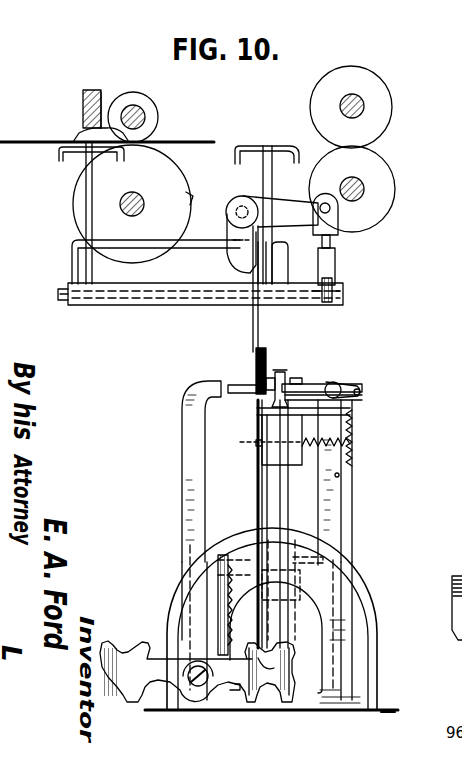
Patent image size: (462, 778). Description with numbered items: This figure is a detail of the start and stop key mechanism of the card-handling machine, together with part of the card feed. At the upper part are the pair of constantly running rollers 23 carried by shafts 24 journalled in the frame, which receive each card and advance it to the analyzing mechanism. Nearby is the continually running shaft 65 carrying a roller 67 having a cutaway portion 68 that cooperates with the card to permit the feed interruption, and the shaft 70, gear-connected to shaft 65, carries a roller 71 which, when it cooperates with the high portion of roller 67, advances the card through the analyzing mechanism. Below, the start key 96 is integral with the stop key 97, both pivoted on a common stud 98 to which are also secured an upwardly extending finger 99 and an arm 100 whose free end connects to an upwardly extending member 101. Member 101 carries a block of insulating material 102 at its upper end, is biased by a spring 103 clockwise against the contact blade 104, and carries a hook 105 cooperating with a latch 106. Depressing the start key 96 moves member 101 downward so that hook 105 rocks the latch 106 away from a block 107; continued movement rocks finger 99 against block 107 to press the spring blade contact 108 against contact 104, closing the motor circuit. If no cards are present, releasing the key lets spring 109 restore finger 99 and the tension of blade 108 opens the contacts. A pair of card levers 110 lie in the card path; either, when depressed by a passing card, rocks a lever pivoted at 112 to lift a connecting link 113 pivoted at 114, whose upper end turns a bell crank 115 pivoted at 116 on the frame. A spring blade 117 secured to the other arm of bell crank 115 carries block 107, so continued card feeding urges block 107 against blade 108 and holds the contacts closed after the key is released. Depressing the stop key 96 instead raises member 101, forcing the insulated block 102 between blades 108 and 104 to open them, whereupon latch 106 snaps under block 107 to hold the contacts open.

The constantly running rollers 23 is at (376, 184).
The shafts 24 is at (358, 115).
The continually running shaft 65 is at (141, 198).
The roller 67 is at (82, 214).
The cutaway portion 68 is at (181, 164).
The shaft 70 is at (140, 112).
The roller 71 is at (159, 117).
The start key 96 is at (273, 667).
The stop key 97 is at (118, 660).
The stud 98 is at (200, 688).
The finger 99 is at (182, 421).
The arm 100 is at (239, 692).
The upwardly extending member 101 is at (268, 496).
The block of insulating material 102 is at (268, 420).
The spring 103 is at (330, 455).
The contact blade 104 is at (287, 372).
The hook 105 is at (298, 385).
The latch 106 is at (342, 384).
The block 107 is at (267, 356).
The spring blade contact 108 is at (262, 393).
The spring 109 is at (215, 590).
The card levers 110 is at (60, 160).
The pivot 112 is at (58, 297).
The connecting link 113 is at (336, 264).
The pivot 114 is at (336, 297).
The bell crank 115 is at (238, 262).
The pivot 116 is at (240, 206).
The spring blade 117 is at (259, 332).